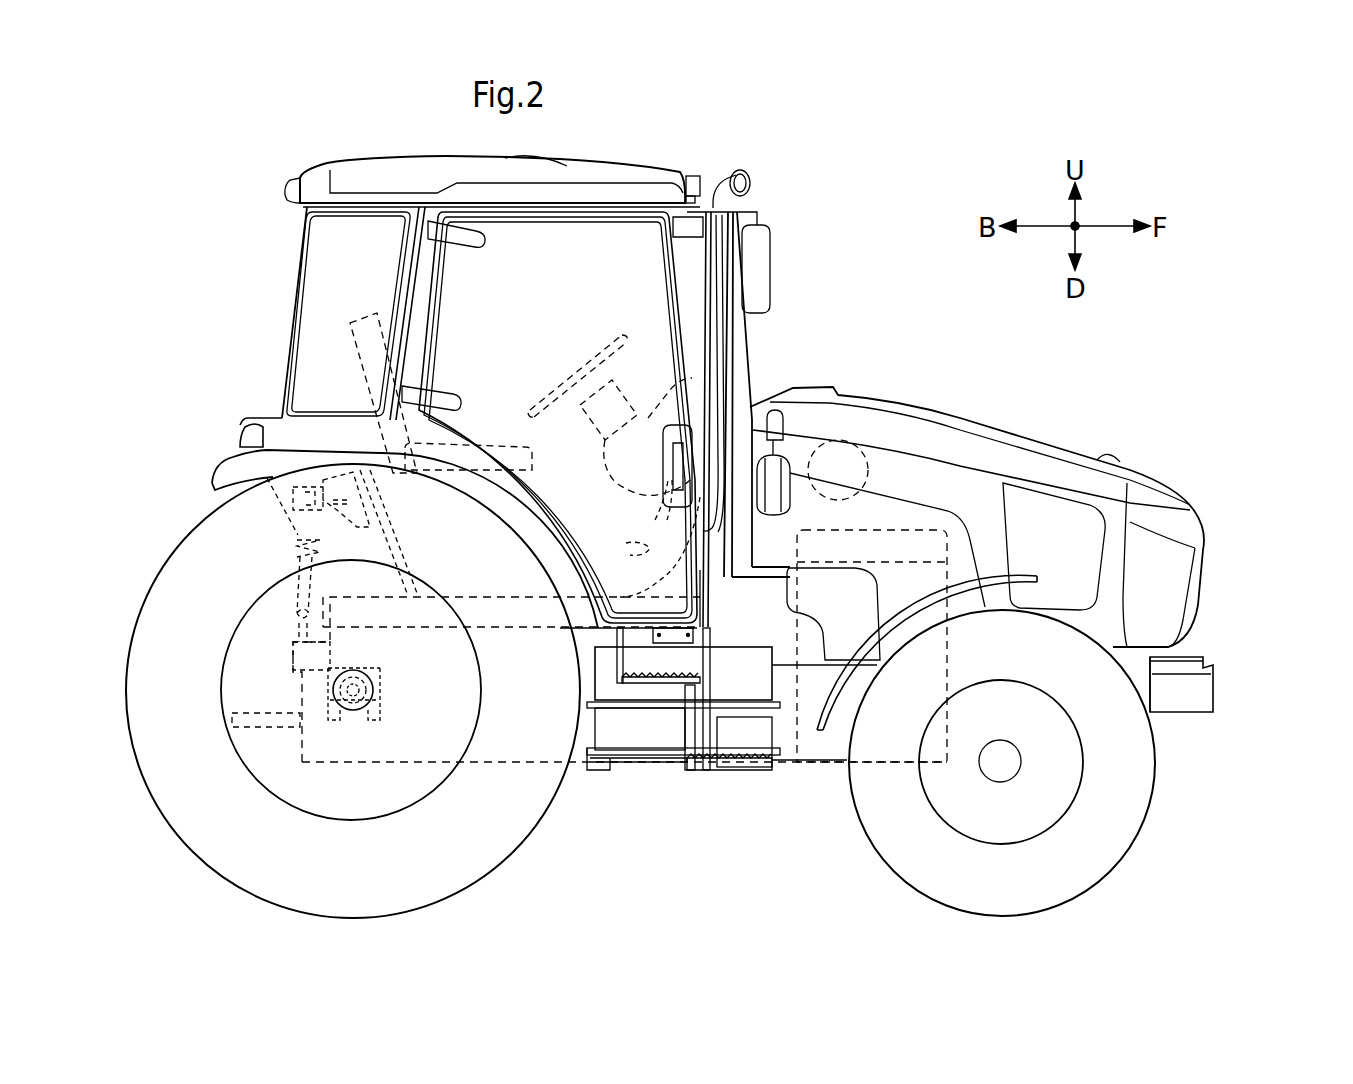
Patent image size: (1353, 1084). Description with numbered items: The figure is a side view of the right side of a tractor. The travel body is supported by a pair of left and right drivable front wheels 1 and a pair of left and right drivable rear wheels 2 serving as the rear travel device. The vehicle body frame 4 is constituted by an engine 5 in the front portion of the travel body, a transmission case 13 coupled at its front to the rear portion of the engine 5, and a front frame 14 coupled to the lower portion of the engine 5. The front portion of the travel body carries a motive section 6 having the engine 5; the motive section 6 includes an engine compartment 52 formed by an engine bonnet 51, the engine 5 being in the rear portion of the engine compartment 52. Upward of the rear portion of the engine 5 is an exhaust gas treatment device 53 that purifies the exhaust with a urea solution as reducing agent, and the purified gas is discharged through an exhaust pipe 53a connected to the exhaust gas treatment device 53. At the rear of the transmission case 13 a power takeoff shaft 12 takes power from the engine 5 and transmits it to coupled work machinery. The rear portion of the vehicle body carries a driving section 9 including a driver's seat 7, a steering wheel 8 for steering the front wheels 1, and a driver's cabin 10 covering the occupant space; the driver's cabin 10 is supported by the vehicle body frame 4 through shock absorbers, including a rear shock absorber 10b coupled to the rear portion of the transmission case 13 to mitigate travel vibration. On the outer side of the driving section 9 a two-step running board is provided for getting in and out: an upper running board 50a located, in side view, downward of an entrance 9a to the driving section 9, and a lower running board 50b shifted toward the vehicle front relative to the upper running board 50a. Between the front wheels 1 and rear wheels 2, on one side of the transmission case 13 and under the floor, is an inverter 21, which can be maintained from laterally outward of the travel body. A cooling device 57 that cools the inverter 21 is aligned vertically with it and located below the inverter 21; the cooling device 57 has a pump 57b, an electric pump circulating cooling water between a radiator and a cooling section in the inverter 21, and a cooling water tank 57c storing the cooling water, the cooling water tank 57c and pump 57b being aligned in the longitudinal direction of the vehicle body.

The front wheels 1 is at (1117, 873).
The rear wheels 2 is at (220, 880).
The vehicle body frame 4 is at (1221, 695).
The engine 5 is at (917, 530).
The motive section 6 is at (1003, 418).
The driver's seat 7 is at (358, 313).
The steering wheel 8 is at (598, 347).
The driving section 9 is at (578, 250).
The entrance 9a is at (637, 582).
The driver's cabin 10 is at (375, 150).
The rear shock absorber 10b is at (290, 547).
The power takeoff shaft 12 is at (262, 712).
The transmission case 13 is at (508, 762).
The front frame 14 is at (1150, 668).
The inverter 21 is at (598, 680).
The upper running board 50a is at (655, 683).
The lower running board 50b is at (760, 770).
The engine bonnet 51 is at (1060, 455).
The engine compartment 52 is at (980, 453).
The exhaust gas treatment device 53 is at (858, 440).
The exhaust pipe 53a is at (740, 350).
The cooling device 57 is at (597, 778).
The pump 57b is at (738, 740).
The cooling water tank 57c is at (668, 735).